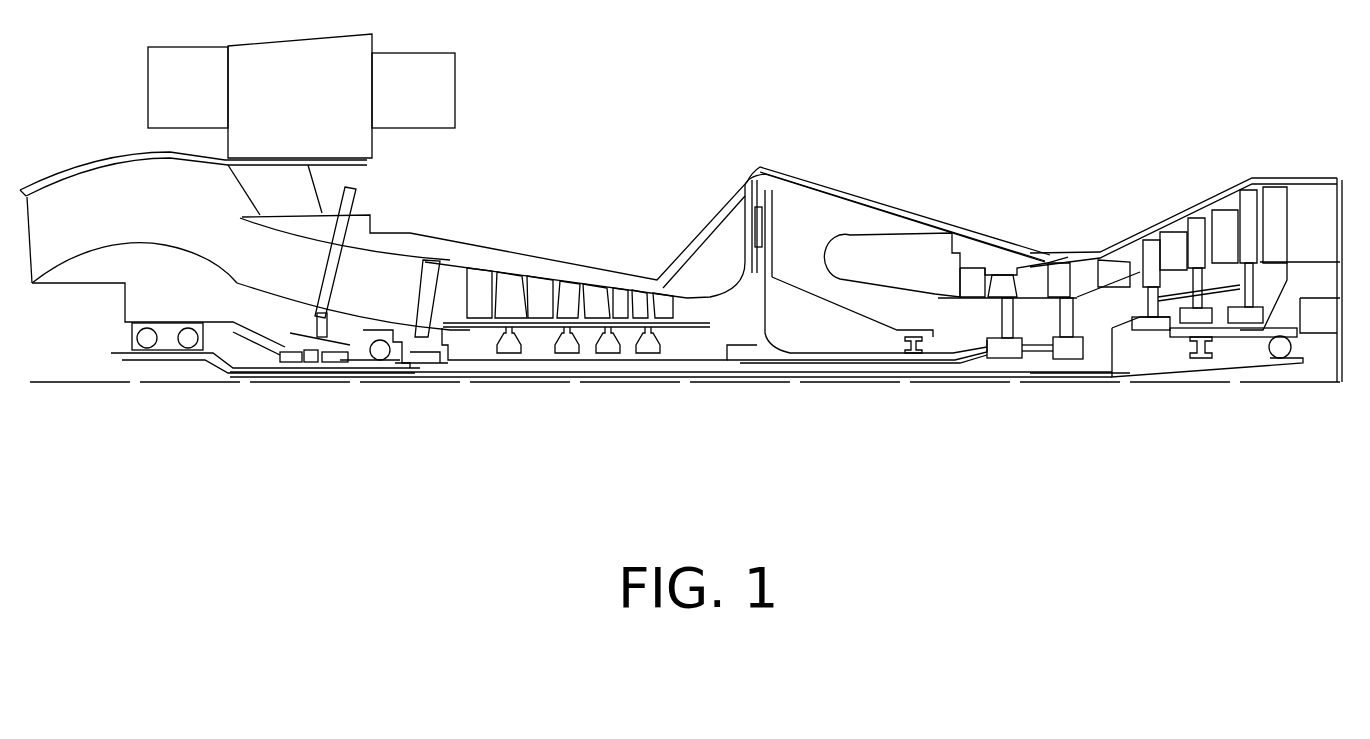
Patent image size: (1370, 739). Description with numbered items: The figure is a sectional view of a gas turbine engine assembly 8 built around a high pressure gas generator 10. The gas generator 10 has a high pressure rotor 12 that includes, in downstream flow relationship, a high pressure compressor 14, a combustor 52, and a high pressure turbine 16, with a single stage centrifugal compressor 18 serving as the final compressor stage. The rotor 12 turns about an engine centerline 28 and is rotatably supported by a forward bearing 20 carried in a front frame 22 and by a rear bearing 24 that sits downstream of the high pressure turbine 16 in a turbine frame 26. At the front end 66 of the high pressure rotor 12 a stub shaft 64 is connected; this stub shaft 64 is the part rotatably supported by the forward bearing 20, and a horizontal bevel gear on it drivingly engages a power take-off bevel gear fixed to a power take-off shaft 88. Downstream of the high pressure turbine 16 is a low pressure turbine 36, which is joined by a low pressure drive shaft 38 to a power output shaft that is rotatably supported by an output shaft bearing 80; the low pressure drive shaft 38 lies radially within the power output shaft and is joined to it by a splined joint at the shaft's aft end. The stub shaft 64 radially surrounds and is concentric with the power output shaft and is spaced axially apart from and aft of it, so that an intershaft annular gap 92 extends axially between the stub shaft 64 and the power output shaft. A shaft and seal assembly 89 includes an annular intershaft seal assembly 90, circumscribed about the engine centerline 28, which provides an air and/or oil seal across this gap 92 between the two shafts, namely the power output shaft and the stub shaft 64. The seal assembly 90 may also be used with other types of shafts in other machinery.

The gas turbine engine assembly 8 is at (508, 440).
The high pressure gas generator 10 is at (625, 245).
The high pressure rotor 12 is at (663, 327).
The high pressure compressor 14 is at (528, 262).
The high pressure turbine 16 is at (1037, 246).
The single stage centrifugal compressor 18 is at (748, 366).
The forward bearing 20 is at (380, 360).
The front frame 22 is at (375, 288).
The rear bearing 24 is at (1283, 360).
The turbine frame 26 is at (1100, 253).
The engine centerline 28 is at (785, 382).
The low pressure turbine 36 is at (1183, 194).
The low pressure drive shaft 38 is at (930, 380).
The combustor 52 is at (873, 205).
The stub shaft 64 is at (400, 370).
The front end 66 is at (417, 360).
The output shaft bearing 80 is at (293, 363).
The power take-off shaft 88 is at (343, 263).
The shaft and seal assembly 89 is at (306, 318).
The intershaft seal assembly 90 is at (309, 391).
The intershaft annular gap 92 is at (318, 377).